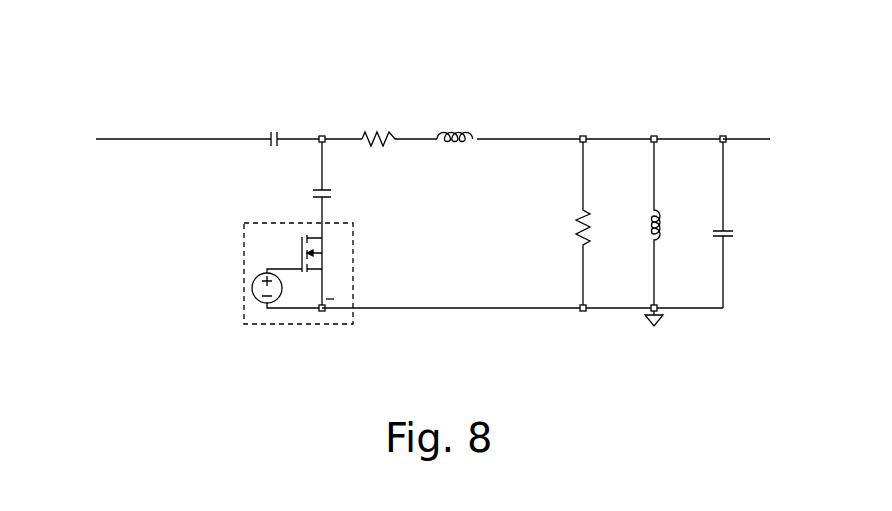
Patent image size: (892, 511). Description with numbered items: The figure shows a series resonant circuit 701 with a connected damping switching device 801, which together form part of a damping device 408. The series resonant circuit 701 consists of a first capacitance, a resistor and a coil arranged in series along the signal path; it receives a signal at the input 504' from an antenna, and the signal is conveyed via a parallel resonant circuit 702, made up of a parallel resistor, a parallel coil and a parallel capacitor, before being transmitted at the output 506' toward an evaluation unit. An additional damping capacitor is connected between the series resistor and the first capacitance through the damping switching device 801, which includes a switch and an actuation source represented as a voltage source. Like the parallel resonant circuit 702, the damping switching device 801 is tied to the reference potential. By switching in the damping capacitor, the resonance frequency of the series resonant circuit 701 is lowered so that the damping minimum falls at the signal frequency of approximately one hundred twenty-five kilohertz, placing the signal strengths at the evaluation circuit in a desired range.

The damping device 408 is at (121, 71).
The series resonant circuit 701 is at (246, 92).
The parallel resonant circuit 702 is at (648, 105).
The damping switching device 801 is at (244, 238).
The input 504' is at (183, 163).
The output 506' is at (763, 75).